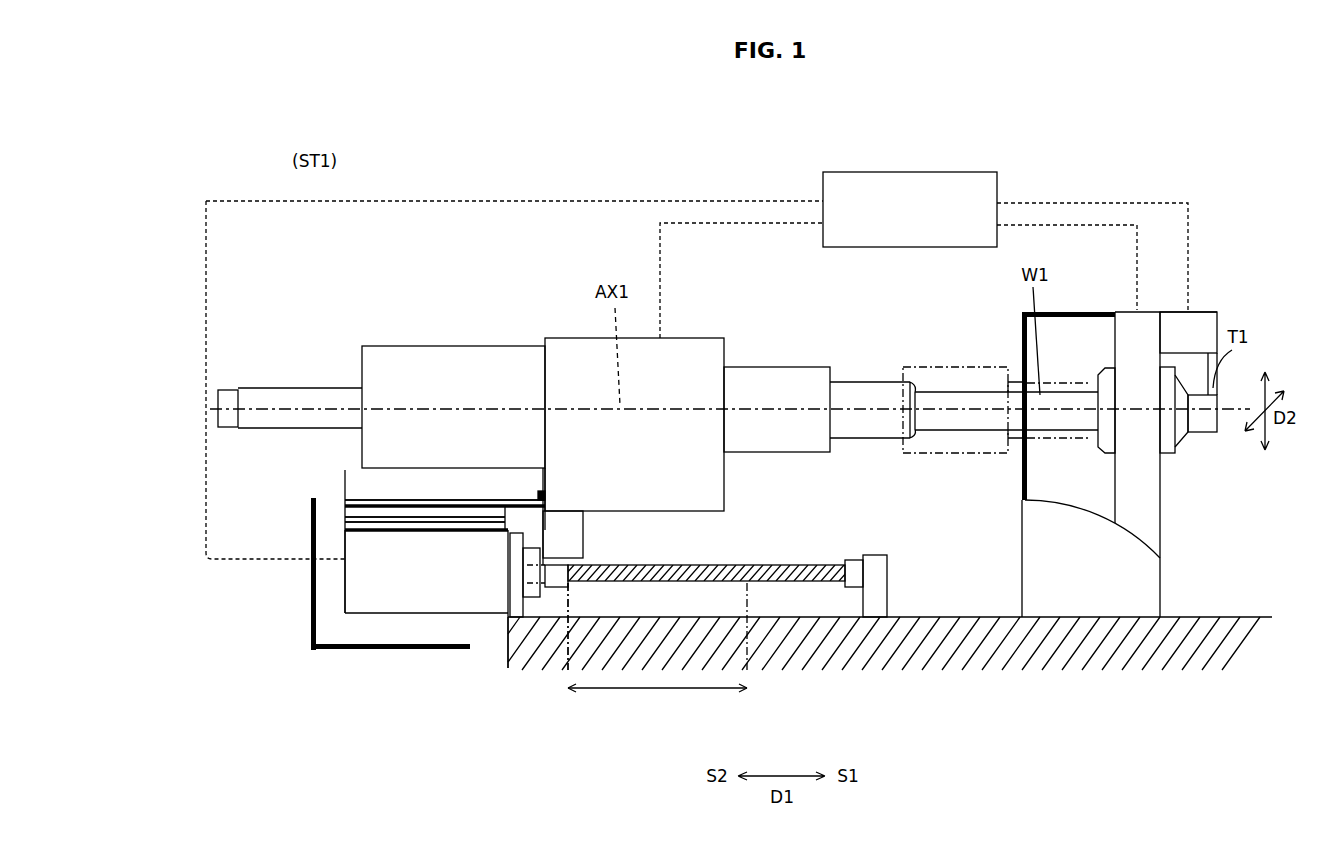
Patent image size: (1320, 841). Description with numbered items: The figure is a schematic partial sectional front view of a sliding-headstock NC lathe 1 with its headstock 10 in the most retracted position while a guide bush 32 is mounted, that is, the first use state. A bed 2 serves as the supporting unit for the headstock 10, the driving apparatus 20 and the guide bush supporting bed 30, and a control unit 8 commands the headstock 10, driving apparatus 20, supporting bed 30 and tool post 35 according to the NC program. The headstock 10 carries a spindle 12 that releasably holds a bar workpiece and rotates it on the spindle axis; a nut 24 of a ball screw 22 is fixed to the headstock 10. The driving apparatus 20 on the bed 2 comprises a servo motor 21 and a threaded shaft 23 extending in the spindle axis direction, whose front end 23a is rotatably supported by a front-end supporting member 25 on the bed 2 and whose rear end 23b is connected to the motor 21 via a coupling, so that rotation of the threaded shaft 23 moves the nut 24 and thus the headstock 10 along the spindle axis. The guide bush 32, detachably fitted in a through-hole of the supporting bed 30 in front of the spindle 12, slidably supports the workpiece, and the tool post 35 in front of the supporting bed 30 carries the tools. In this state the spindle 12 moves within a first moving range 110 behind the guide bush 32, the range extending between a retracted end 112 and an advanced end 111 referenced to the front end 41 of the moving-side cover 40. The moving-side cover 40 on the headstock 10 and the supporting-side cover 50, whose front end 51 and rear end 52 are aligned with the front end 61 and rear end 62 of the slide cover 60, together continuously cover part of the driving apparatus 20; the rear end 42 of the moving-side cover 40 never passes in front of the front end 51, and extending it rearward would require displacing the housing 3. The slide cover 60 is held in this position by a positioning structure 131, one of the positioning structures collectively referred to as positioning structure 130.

The lathe 1 is at (252, 170).
The bed 2 is at (945, 617).
The housing 3 is at (311, 616).
The control unit 8 is at (898, 255).
The headstock 10 is at (683, 367).
The spindle 12 is at (899, 441).
The driving apparatus 20 is at (441, 592).
The servo motor 21 is at (383, 589).
The ball screw 22 is at (788, 598).
The threaded shaft 23 is at (645, 565).
The front end of threaded shaft 23a is at (845, 562).
The rear end of threaded shaft 23b is at (551, 600).
The nut 24 is at (553, 592).
The front-end supporting member 25 is at (890, 582).
The supporting bed 30 is at (1162, 528).
The guide bush 32 is at (1099, 372).
The tool post 35 is at (1208, 310).
The moving-side cover 40 is at (443, 503).
The front end of moving-side cover 41 is at (540, 494).
The rear end of moving-side cover 42 is at (345, 473).
The supporting-side cover 50 is at (393, 532).
The front end of supporting-side cover 51 is at (508, 540).
The rear end of supporting-side cover 52 is at (345, 531).
The slide cover 60 is at (405, 503).
The front end of slide cover 61 is at (508, 507).
The rear end of slide cover 62 is at (345, 517).
The first moving range 110 is at (657, 702).
The advanced end 111 is at (745, 653).
The retracted end 112 is at (562, 653).
The positioning structure 130 is at (452, 278).
The positioning structure 131 is at (490, 505).